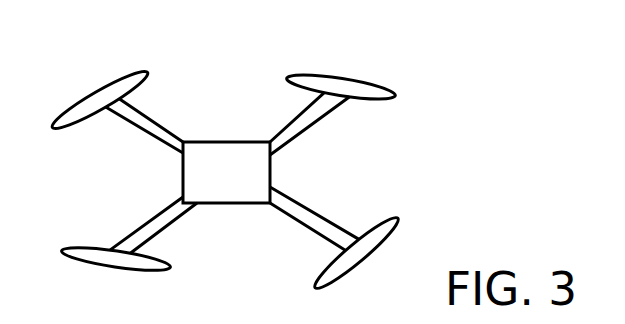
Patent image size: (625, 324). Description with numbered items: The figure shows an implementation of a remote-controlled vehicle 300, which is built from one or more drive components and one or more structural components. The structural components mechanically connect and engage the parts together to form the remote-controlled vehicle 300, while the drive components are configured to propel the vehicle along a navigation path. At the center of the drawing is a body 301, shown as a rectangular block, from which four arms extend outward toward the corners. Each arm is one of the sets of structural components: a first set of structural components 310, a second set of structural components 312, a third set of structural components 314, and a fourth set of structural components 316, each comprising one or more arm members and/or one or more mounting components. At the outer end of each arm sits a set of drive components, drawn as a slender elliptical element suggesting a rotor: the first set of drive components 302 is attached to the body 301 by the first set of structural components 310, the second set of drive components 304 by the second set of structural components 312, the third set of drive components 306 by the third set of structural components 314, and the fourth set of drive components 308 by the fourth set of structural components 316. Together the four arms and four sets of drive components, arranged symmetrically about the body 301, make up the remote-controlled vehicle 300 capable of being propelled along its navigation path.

The remote-controlled vehicle 300 is at (487, 100).
The body 301 is at (226, 172).
The first set of drive components 302 is at (148, 71).
The second set of drive components 304 is at (334, 73).
The third set of drive components 306 is at (400, 216).
The fourth set of drive components 308 is at (62, 250).
The first set of structural components 310 is at (163, 118).
The second set of structural components 312 is at (297, 139).
The third set of structural components 314 is at (313, 233).
The fourth set of structural components 316 is at (140, 223).